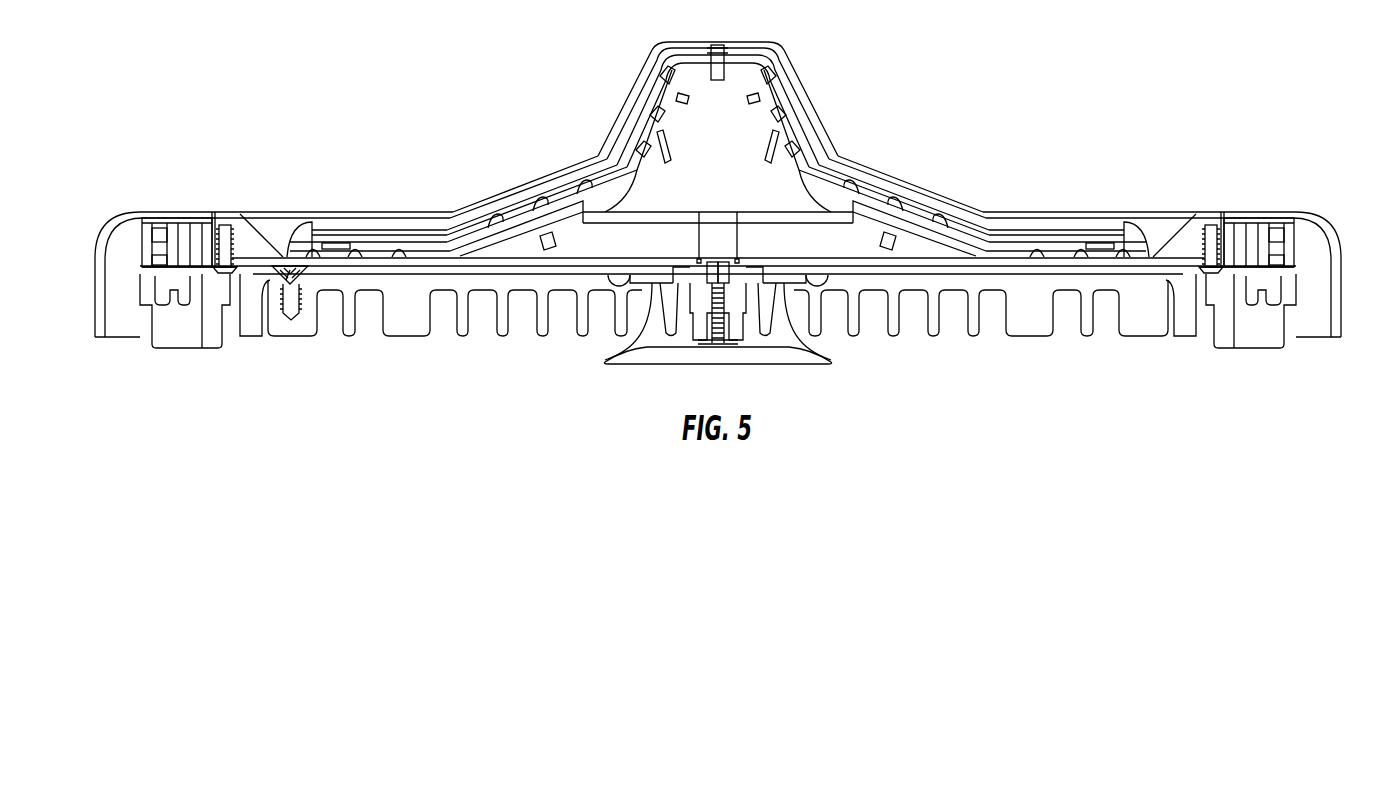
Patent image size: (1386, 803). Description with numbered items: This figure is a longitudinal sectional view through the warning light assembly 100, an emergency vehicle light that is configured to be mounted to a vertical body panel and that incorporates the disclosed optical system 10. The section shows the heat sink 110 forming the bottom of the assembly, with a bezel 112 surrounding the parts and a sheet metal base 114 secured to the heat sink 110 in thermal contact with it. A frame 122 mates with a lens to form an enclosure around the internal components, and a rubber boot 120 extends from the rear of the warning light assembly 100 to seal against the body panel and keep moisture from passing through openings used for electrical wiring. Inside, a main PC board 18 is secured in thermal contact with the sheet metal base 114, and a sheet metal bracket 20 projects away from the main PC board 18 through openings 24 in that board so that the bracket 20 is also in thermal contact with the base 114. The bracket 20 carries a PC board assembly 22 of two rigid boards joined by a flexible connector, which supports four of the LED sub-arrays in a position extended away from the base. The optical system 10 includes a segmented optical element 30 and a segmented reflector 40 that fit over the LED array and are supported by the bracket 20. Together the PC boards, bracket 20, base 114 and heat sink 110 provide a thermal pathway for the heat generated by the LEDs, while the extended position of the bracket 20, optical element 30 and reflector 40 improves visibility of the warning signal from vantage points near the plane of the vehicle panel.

The optical system 10 is at (1058, 195).
The main PC board 18 is at (1131, 263).
The sheet metal bracket 20 is at (787, 170).
The PC board assembly 22 is at (760, 108).
The openings 24 is at (488, 265).
The optical element (lens) 30 is at (547, 188).
The reflector 40 is at (249, 230).
The warning light assembly 100 is at (277, 168).
The heat sink 110 is at (405, 327).
The bezel 112 is at (1307, 220).
The sheet metal base 114 is at (330, 270).
The rubber boot 120 is at (797, 368).
The frame 122 is at (147, 256).